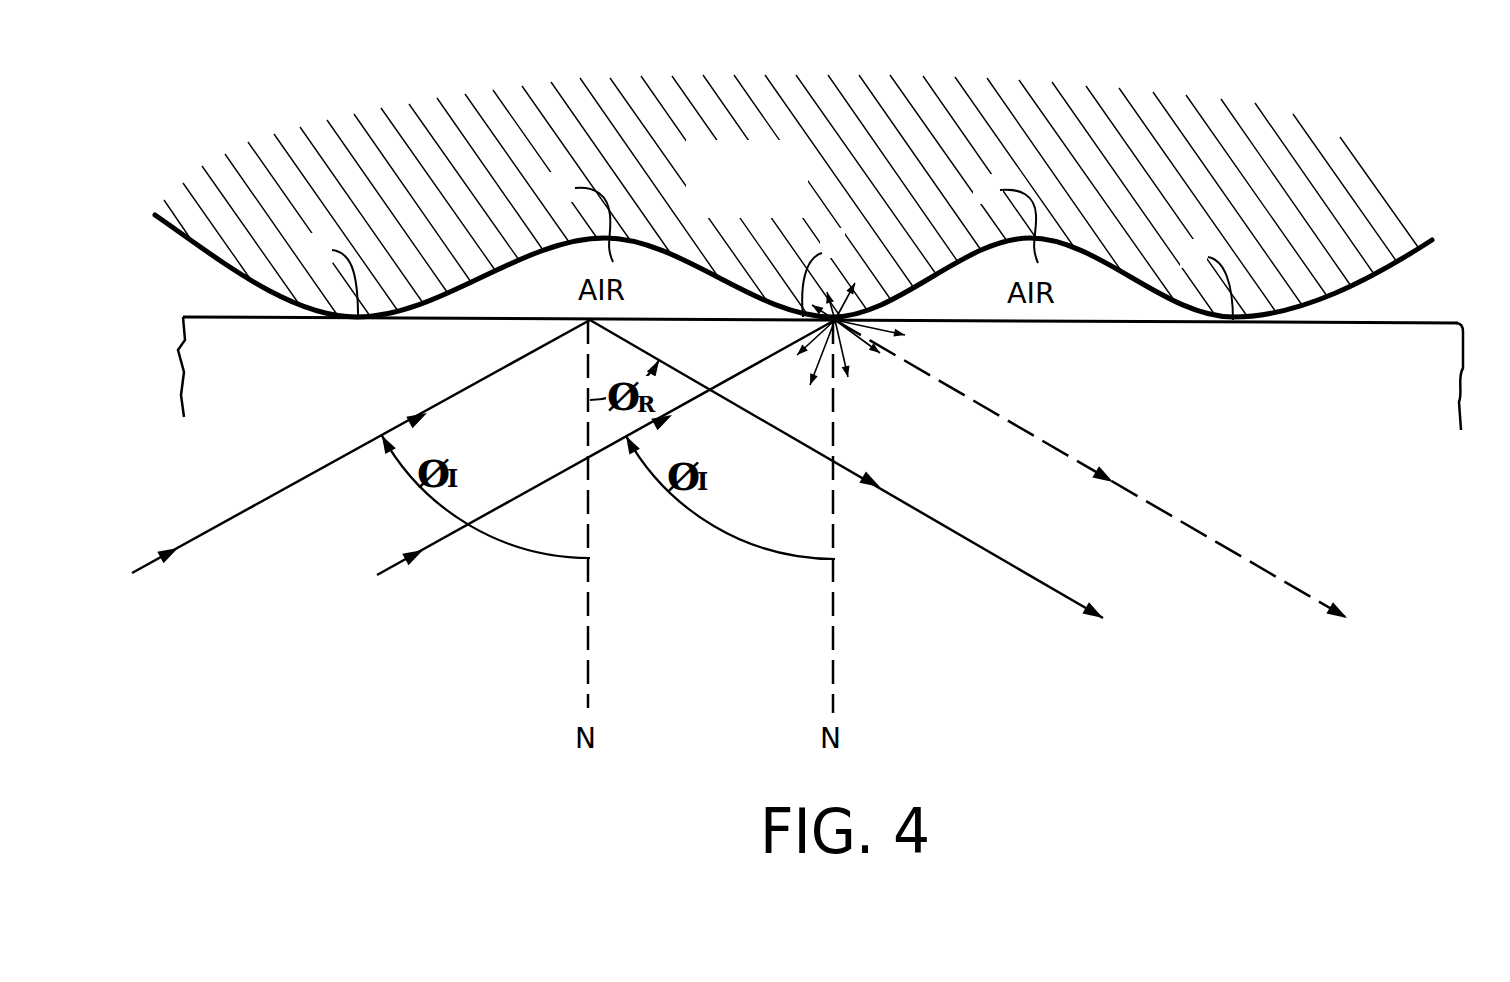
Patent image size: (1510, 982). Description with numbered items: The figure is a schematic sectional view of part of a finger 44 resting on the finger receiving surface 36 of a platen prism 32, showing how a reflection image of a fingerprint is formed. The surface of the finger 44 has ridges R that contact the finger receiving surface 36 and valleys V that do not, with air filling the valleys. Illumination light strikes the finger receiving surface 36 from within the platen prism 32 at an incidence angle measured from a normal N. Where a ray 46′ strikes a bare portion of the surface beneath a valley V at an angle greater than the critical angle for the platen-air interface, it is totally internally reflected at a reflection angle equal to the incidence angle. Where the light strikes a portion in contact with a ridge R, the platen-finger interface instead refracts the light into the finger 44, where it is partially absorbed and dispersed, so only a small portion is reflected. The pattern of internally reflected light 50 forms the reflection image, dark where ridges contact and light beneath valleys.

The platen prism 32 is at (352, 412).
The finger receiving surface 36 is at (1418, 322).
The finger 44 is at (772, 213).
The incident light ray 46′ is at (243, 512).
The internally reflected light 50 is at (1038, 438).